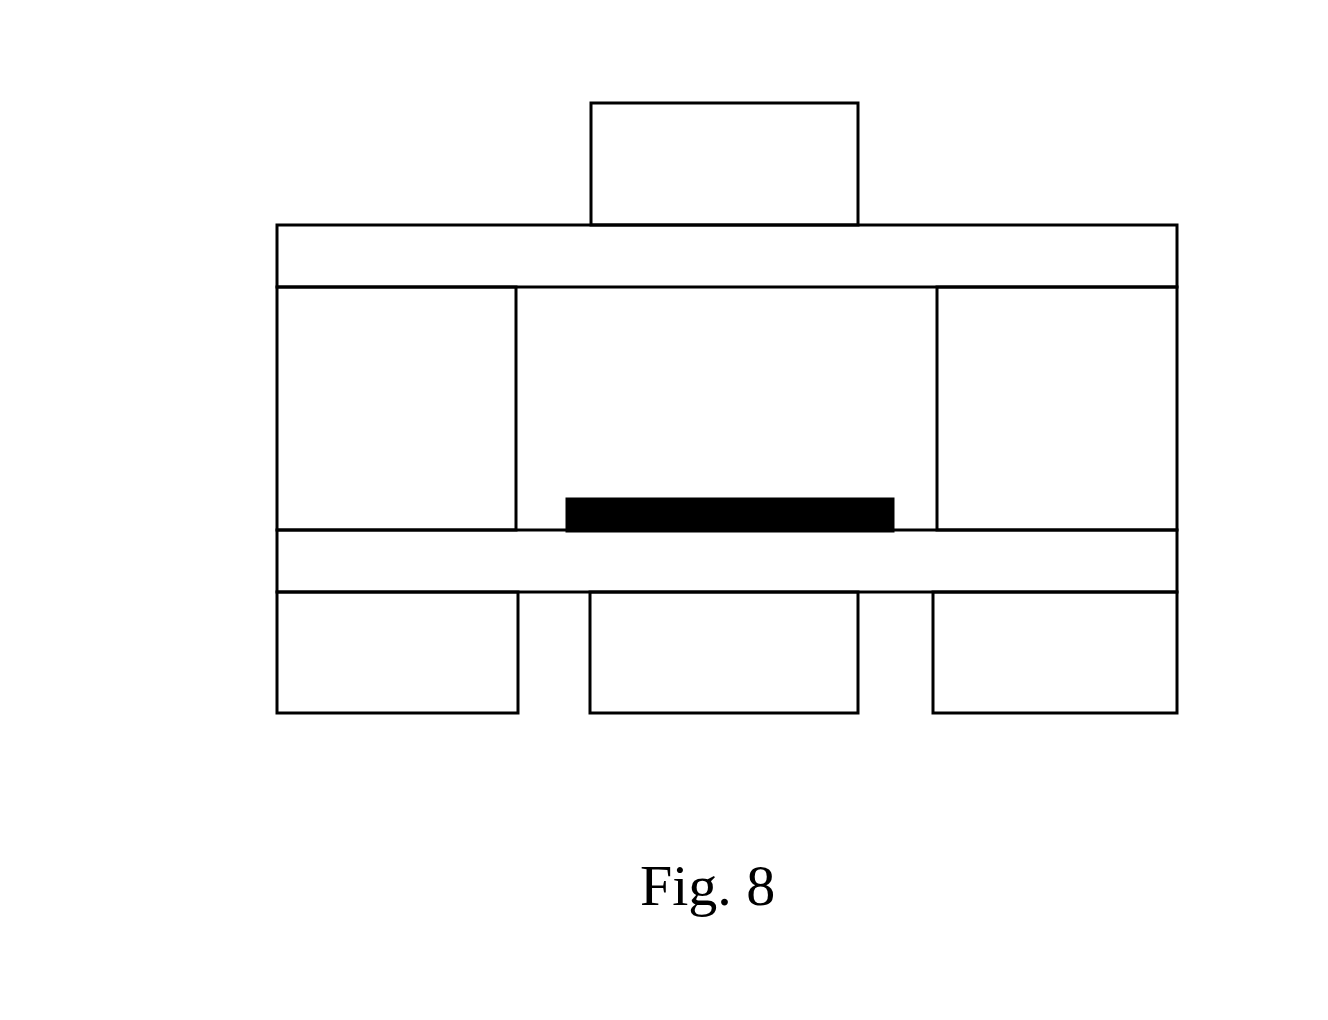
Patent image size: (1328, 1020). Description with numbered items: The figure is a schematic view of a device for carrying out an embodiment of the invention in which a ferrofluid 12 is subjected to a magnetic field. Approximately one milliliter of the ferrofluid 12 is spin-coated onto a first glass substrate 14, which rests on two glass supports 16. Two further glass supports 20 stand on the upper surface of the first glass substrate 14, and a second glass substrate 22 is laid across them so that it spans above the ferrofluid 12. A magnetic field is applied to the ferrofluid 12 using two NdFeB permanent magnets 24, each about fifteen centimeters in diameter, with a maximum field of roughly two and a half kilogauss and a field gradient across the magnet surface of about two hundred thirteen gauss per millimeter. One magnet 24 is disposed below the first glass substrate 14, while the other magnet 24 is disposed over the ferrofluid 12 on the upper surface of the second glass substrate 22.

The ferrofluid 12 is at (753, 499).
The first glass substrate 14 is at (295, 563).
The glass supports 16 is at (365, 677).
The glass supports 20 is at (302, 388).
The second glass substrate 22 is at (1028, 243).
The NdFeB permanent magnets 24 is at (607, 154).